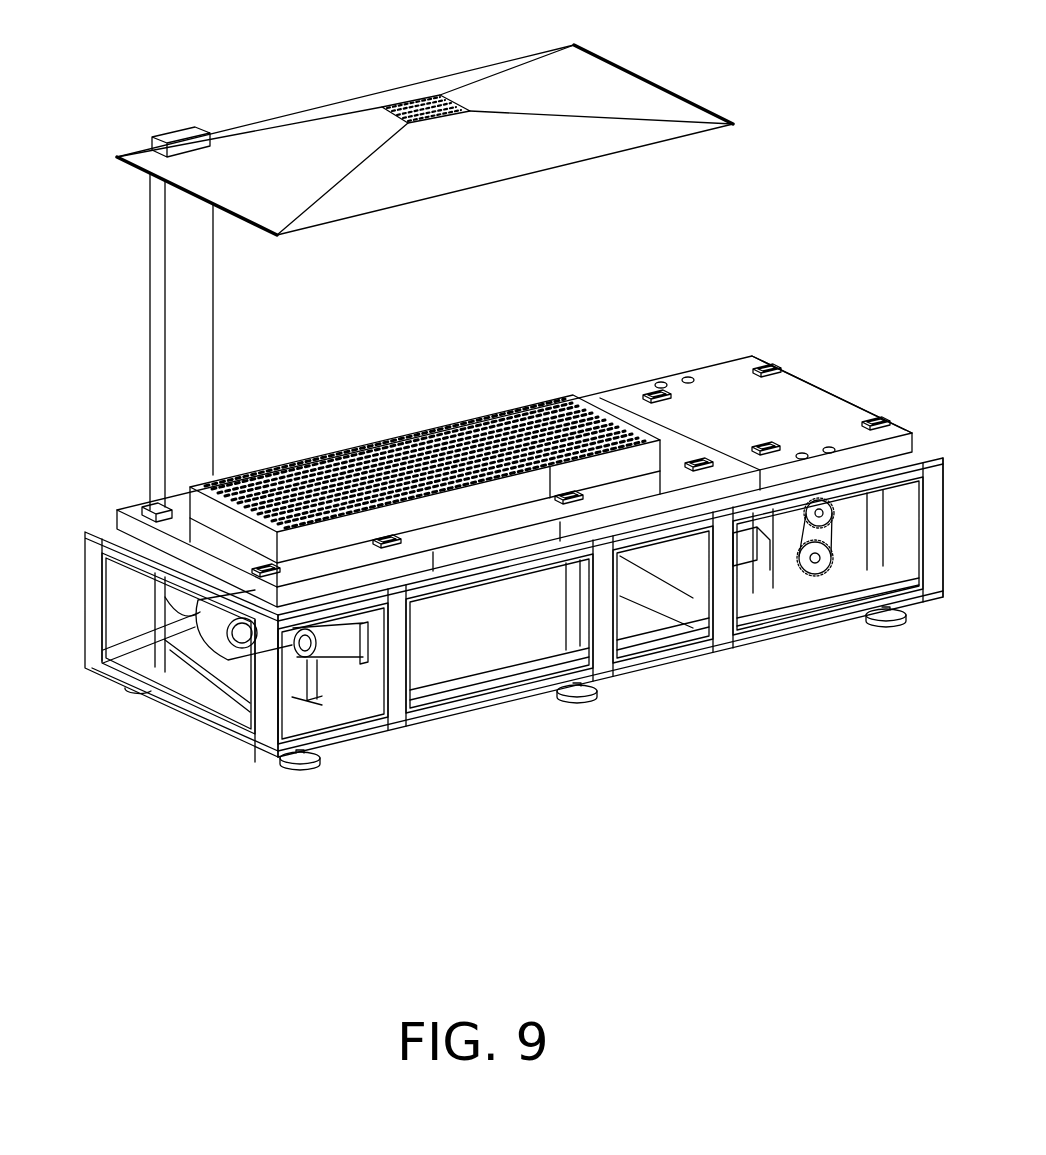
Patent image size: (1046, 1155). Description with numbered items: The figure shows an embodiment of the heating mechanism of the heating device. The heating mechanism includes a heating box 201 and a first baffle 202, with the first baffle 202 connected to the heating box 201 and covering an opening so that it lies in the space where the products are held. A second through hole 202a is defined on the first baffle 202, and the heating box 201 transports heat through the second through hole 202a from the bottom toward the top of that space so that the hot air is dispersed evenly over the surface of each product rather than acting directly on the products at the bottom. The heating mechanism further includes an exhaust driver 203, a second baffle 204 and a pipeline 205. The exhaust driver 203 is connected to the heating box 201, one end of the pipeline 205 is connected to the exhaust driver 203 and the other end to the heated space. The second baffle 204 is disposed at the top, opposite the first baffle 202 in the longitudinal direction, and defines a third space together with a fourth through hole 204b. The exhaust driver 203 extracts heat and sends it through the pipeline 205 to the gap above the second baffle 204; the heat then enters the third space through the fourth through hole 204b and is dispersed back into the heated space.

The heating box 201 is at (475, 650).
The first baffle 202 is at (207, 510).
The second through hole 202a is at (325, 467).
The exhaust driver 203 is at (237, 650).
The second baffle 204 is at (327, 128).
The fourth through hole 204b is at (428, 97).
The pipeline 205 is at (195, 340).